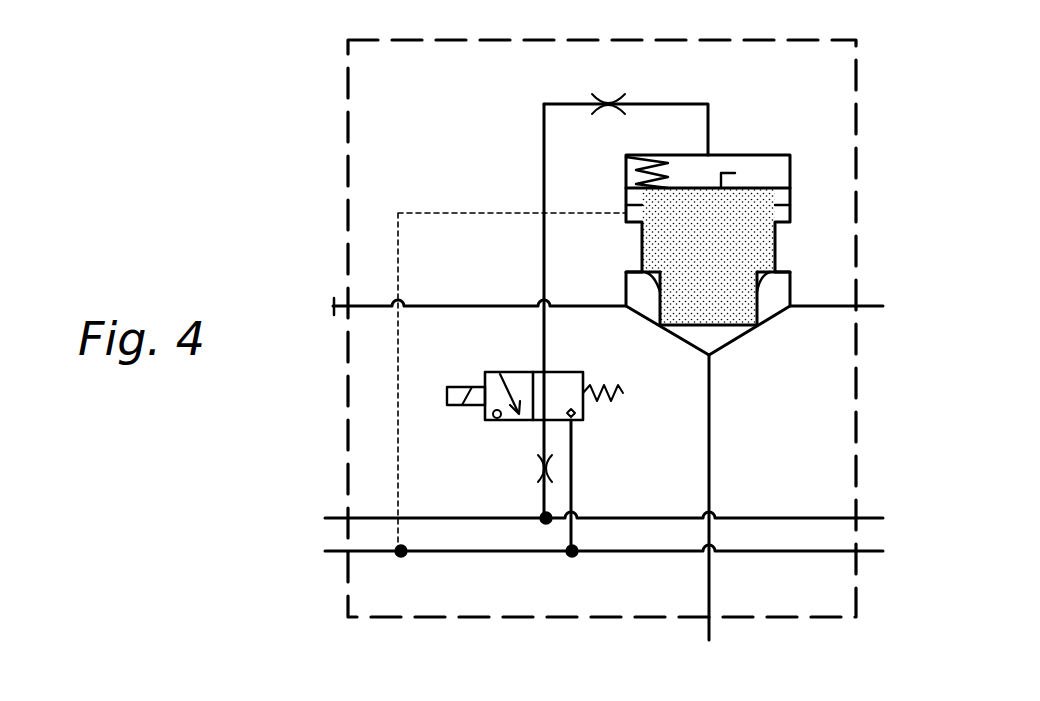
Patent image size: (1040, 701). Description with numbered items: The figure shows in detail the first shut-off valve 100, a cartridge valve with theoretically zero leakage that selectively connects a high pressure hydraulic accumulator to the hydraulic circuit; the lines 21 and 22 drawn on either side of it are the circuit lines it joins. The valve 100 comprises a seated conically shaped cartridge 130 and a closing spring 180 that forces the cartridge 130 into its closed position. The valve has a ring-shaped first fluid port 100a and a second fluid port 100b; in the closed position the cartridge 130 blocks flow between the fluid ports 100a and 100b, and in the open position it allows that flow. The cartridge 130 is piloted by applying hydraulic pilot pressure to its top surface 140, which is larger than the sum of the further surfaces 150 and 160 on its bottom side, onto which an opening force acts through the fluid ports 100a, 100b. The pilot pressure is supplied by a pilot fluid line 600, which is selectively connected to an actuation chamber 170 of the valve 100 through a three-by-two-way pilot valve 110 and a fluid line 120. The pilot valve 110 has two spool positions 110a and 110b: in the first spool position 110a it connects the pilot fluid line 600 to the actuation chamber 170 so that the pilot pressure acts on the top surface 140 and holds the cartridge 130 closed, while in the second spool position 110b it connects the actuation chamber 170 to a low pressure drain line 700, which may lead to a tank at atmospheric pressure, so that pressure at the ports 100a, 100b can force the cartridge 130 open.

The first shut-off valve 100 is at (822, 105).
The first supply line 21 is at (874, 310).
The second supply line 22 is at (712, 442).
The 3/2-way pilot valve 110 is at (515, 430).
The first spool position 110a is at (578, 421).
The second spool position 110b is at (500, 371).
The fluid line 120 is at (543, 164).
The cartridge 130 is at (732, 250).
The top surface 140 is at (750, 175).
The further surface 150 is at (640, 283).
The further surface 160 is at (727, 328).
The actuation chamber 170 is at (710, 183).
The closing spring 180 is at (648, 172).
The first fluid port 100a is at (648, 293).
The second fluid port 100b is at (700, 336).
The pilot fluid line 600 is at (620, 517).
The low pressure drain line 700 is at (470, 553).